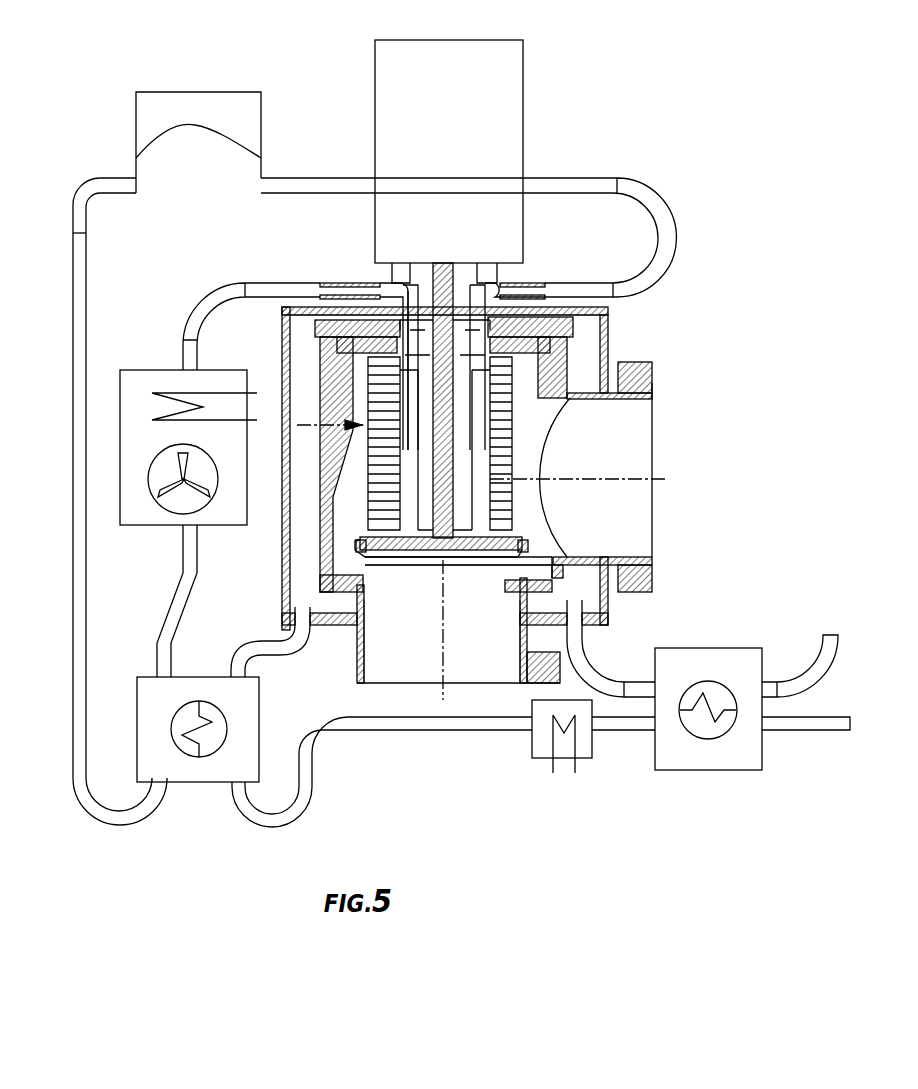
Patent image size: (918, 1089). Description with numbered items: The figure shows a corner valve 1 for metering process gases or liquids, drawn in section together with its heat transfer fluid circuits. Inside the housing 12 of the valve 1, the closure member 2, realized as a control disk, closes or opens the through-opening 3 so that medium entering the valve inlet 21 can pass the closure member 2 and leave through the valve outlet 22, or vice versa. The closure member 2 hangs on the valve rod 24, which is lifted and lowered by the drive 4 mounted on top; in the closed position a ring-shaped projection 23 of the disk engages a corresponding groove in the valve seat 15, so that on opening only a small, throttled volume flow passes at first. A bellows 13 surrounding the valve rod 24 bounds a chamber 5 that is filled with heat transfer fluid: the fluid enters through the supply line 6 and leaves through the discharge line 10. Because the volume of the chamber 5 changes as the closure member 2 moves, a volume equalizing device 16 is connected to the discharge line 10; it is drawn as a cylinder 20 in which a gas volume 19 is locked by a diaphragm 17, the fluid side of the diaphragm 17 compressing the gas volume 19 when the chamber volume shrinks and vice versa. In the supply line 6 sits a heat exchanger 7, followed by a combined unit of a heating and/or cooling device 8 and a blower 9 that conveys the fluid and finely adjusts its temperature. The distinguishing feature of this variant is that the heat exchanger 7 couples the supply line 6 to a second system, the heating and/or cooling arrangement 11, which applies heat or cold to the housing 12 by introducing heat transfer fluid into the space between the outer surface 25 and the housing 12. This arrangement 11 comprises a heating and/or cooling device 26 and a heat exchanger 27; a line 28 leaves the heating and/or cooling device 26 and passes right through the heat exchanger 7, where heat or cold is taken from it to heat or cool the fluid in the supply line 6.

The valve 1 is at (668, 333).
The closure member 2 is at (513, 535).
The through-opening 3 is at (488, 590).
The drive 4 is at (513, 95).
The chamber 5 is at (513, 437).
The supply line 6 is at (293, 293).
The heat exchanger 7 is at (246, 713).
The heating and/or cooling device 8 is at (168, 395).
The blower 9 is at (178, 508).
The discharge line 10 is at (593, 294).
The heating and/or cooling arrangement 11 is at (456, 750).
The housing 12 is at (567, 570).
The bellows 13 is at (502, 480).
The valve seat 15 is at (340, 583).
The volume equalizing device 16 is at (243, 103).
The diaphragm 17 is at (150, 143).
The gas volume 19 is at (145, 106).
The cylinder 20 is at (137, 100).
The valve inlet 21 is at (426, 678).
The valve outlet 22 is at (637, 520).
The ring-shaped projection 23 is at (358, 553).
The valve rod 24 is at (628, 385).
The outer surface 25 is at (610, 328).
The heating and/or cooling device 26 is at (585, 752).
The heat exchanger 27 is at (740, 755).
The line 28 is at (300, 805).